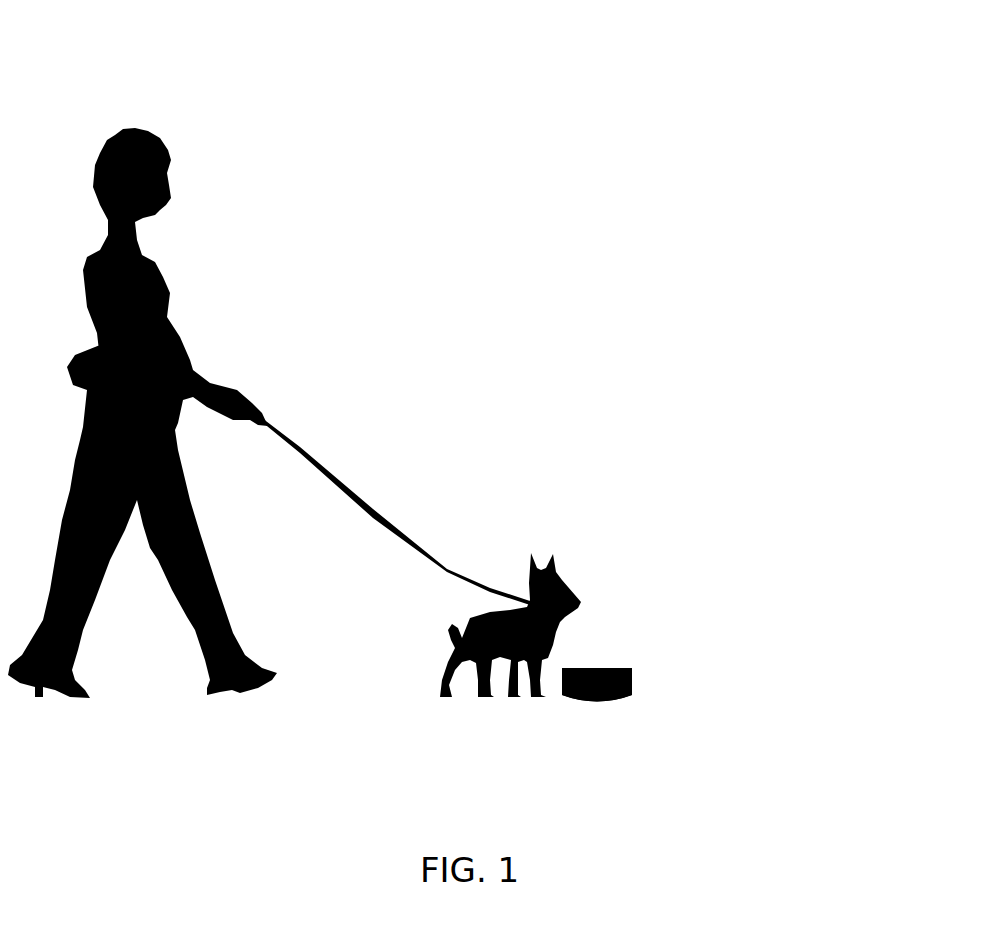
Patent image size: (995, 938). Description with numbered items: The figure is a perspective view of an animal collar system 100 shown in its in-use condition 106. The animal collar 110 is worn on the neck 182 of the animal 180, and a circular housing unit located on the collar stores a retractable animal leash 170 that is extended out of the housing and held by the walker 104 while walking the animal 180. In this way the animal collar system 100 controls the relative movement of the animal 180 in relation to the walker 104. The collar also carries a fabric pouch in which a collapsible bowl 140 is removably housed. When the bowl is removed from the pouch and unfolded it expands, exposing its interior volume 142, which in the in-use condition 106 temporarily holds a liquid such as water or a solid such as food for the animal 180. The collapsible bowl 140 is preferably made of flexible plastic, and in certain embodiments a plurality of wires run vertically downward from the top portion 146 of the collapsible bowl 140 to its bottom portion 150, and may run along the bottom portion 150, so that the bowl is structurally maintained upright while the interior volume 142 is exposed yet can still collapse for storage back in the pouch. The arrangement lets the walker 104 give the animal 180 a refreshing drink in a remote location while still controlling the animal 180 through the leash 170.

The animal collar system 100 is at (512, 92).
The user 104 is at (157, 137).
The in-use condition 106 is at (560, 127).
The animal collar 110 is at (560, 622).
The collapsible bowl 140 is at (558, 687).
The interior volume 142 is at (610, 665).
The top portion 146 is at (595, 663).
The bottom portion 150 is at (597, 707).
The retractable animal leash 170 is at (345, 490).
The animal 180 is at (487, 607).
The neck 182 is at (530, 595).